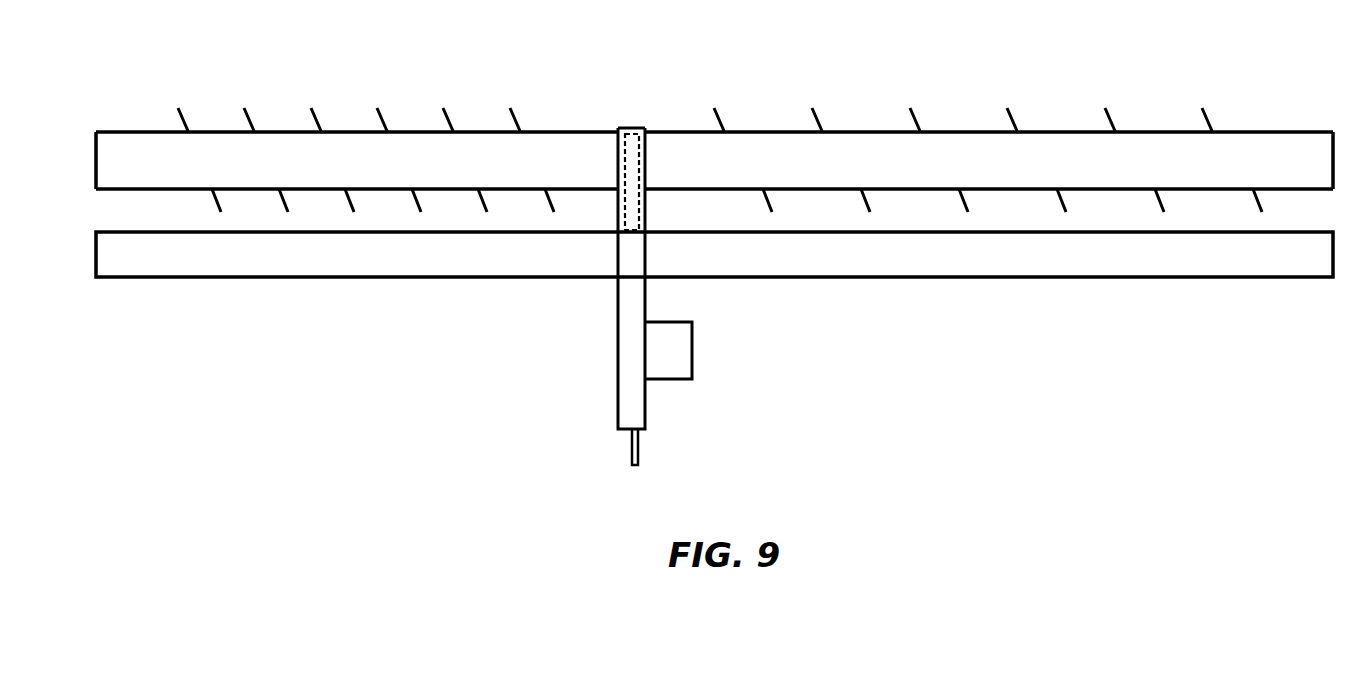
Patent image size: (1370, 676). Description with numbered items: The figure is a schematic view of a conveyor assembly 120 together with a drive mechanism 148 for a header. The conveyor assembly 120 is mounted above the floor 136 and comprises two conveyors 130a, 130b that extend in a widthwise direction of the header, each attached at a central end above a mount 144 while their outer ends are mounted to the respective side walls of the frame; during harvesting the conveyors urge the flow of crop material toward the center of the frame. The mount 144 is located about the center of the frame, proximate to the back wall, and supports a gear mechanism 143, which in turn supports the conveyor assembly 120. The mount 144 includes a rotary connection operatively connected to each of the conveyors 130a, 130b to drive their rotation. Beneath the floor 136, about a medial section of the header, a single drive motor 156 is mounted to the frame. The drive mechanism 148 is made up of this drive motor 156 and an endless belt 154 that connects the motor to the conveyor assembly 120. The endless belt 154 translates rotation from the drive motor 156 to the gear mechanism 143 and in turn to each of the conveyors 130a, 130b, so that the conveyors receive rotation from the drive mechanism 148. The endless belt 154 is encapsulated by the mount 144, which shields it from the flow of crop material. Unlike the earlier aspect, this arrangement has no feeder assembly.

The conveyor assembly 120 is at (210, 94).
The conveyor 130a is at (355, 131).
The conveyor 130b is at (972, 131).
The floor 136 is at (1130, 277).
The gear mechanism 143 is at (633, 132).
The mount 144 is at (617, 214).
The drive mechanism 148 is at (689, 439).
The endless belt 154 is at (630, 457).
The drive motor 156 is at (692, 352).